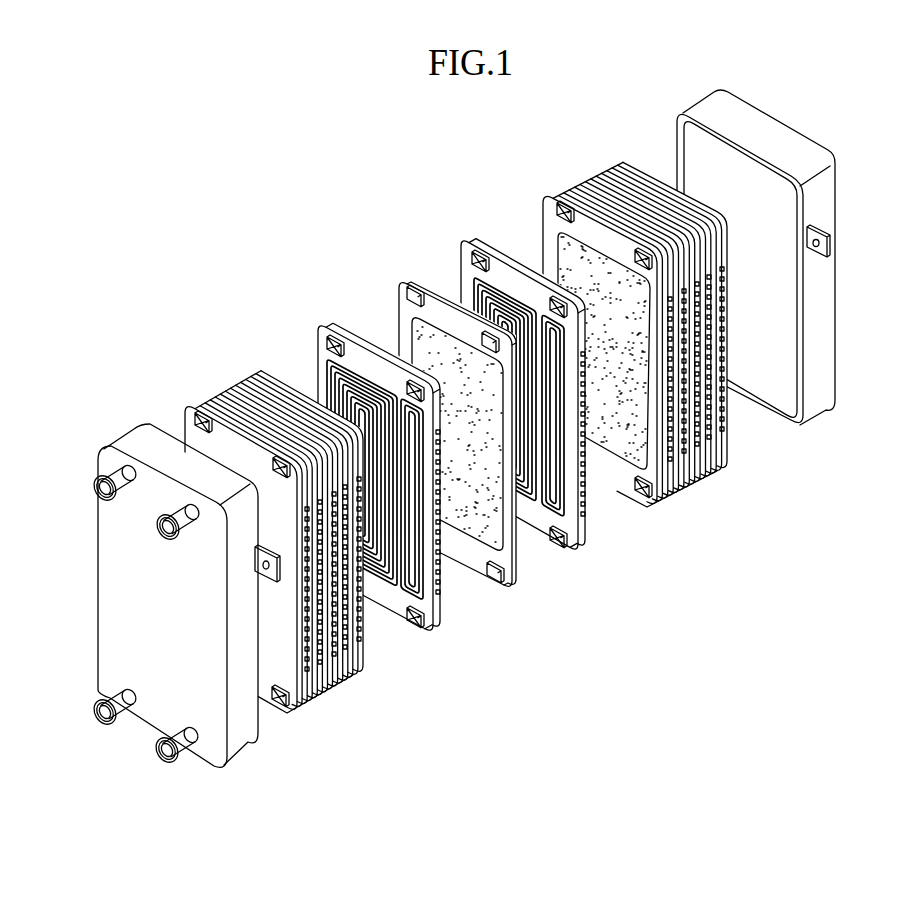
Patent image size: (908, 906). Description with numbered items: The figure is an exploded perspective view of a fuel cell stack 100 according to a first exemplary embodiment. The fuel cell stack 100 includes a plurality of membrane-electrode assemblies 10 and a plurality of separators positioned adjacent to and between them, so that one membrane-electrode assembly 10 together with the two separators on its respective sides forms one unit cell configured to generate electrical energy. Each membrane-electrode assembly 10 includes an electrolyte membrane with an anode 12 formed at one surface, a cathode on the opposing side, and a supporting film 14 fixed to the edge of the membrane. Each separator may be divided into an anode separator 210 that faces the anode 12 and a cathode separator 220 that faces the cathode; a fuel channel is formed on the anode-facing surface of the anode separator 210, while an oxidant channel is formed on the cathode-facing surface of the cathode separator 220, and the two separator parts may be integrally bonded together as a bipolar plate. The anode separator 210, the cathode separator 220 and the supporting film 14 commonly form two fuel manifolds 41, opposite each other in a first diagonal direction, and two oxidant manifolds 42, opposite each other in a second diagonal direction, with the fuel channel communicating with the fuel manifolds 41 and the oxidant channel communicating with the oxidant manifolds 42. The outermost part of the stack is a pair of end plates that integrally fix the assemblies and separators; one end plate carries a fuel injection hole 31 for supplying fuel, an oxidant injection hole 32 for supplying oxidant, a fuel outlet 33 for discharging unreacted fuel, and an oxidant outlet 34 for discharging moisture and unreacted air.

The fuel cell stack 100 is at (310, 168).
The membrane-electrode assembly 10 is at (470, 431).
The anode 12 is at (488, 525).
The supporting film 14 is at (400, 292).
The fuel injection hole 31 is at (158, 527).
The oxidant injection hole 32 is at (97, 485).
The fuel outlet 33 is at (95, 712).
The oxidant outlet 34 is at (160, 753).
The fuel manifold 41 is at (407, 383).
The oxidant manifold 42 is at (330, 338).
The anode separator 210 is at (442, 617).
The cathode separator 220 is at (440, 633).